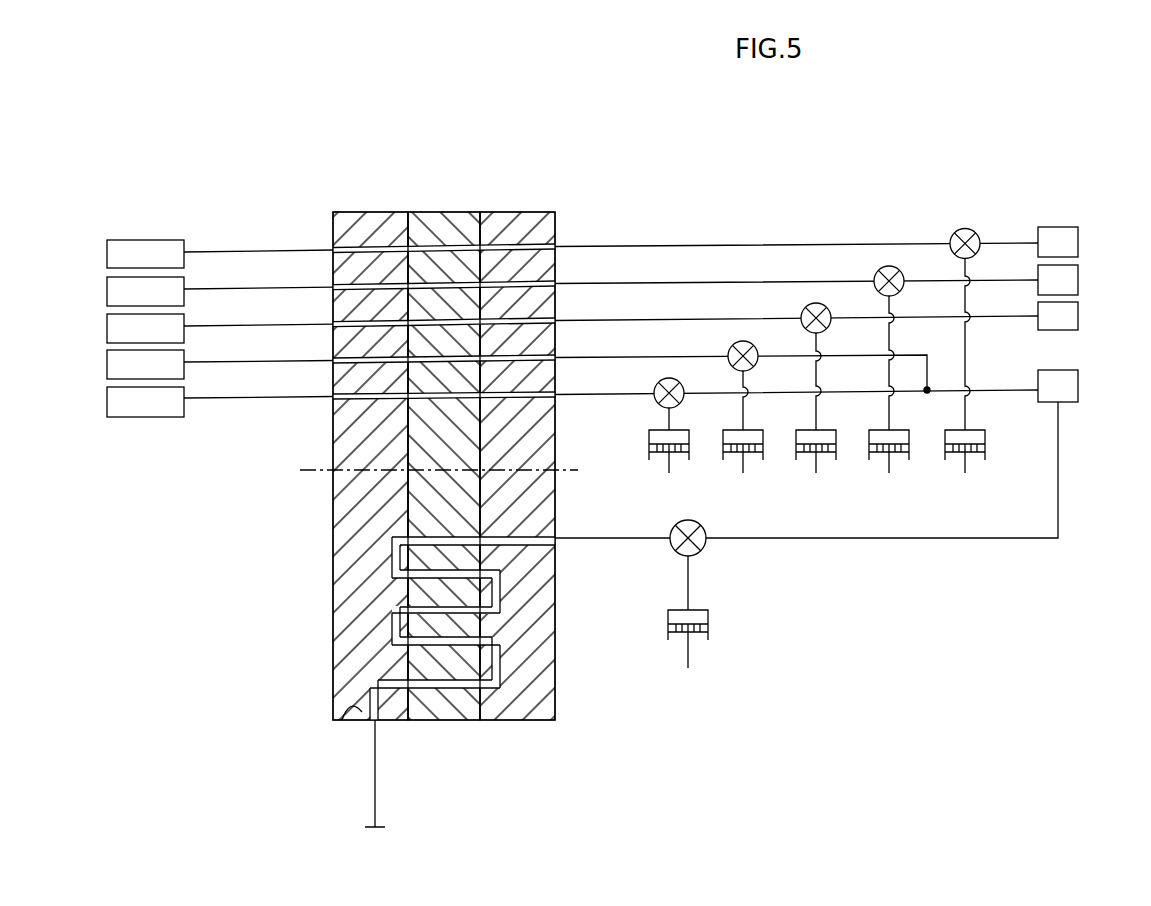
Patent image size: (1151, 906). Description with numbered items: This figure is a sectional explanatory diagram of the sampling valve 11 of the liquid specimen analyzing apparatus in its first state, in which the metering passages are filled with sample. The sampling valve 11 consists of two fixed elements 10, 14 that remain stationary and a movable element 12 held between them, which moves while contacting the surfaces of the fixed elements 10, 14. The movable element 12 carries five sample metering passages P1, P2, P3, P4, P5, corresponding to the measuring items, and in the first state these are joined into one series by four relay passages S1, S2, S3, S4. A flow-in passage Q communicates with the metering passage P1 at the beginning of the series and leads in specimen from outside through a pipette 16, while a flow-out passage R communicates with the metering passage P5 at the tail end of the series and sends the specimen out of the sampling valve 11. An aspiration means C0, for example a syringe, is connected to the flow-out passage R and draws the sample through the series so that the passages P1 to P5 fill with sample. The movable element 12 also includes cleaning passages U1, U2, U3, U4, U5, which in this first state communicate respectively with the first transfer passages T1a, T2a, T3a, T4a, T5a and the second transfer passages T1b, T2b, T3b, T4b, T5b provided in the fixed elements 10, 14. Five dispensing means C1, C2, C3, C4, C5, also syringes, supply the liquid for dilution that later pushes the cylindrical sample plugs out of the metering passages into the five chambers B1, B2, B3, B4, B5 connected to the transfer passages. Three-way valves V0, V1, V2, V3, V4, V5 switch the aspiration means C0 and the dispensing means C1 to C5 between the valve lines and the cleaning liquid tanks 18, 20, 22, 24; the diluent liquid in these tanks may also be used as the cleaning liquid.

The fixed element 10 is at (384, 212).
The sampling valve 11 is at (532, 737).
The movable element 12 is at (476, 212).
The fixed element 14 is at (530, 212).
The pipette 16 is at (375, 780).
The cleaning liquid tank 18 is at (1078, 392).
The cleaning liquid tank 20 is at (1078, 325).
The cleaning liquid tank 22 is at (1078, 286).
The cleaning liquid tank 24 is at (1078, 246).
The chamber B1 is at (107, 403).
The chamber B2 is at (107, 365).
The chamber B3 is at (107, 330).
The chamber B4 is at (107, 292).
The chamber B5 is at (107, 254).
The first transfer passage T1a is at (365, 393).
The first transfer passage T2a is at (365, 357).
The first transfer passage T3a is at (365, 320).
The first transfer passage T4a is at (365, 283).
The first transfer passage T5a is at (365, 245).
The second transfer passage T1b is at (528, 389).
The second transfer passage T2b is at (528, 352).
The second transfer passage T3b is at (528, 315).
The second transfer passage T4b is at (528, 278).
The second transfer passage T5b is at (528, 241).
The cleaning passage U1 is at (438, 393).
The cleaning passage U2 is at (442, 357).
The cleaning passage U3 is at (455, 320).
The cleaning passage U4 is at (462, 283).
The cleaning passage U5 is at (470, 246).
The three-way valve V0 is at (703, 550).
The three-way valve V1 is at (660, 403).
The three-way valve V2 is at (735, 343).
The three-way valve V3 is at (808, 307).
The three-way valve V4 is at (880, 271).
The three-way valve V5 is at (967, 229).
The aspiration means C0 is at (712, 628).
The dispensing means C1 is at (684, 471).
The dispensing means C2 is at (758, 471).
The dispensing means C3 is at (832, 471).
The dispensing means C4 is at (905, 471).
The dispensing means C5 is at (980, 471).
The metering passage P1 is at (435, 688).
The metering passage P2 is at (458, 655).
The metering passage P3 is at (426, 610).
The metering passage P4 is at (426, 582).
The metering passage P5 is at (425, 535).
The relay passage S1 is at (502, 665).
The relay passage S2 is at (392, 630).
The relay passage S3 is at (502, 600).
The relay passage S4 is at (392, 558).
The flow-in passage Q is at (340, 722).
The flow-out passage R is at (530, 547).